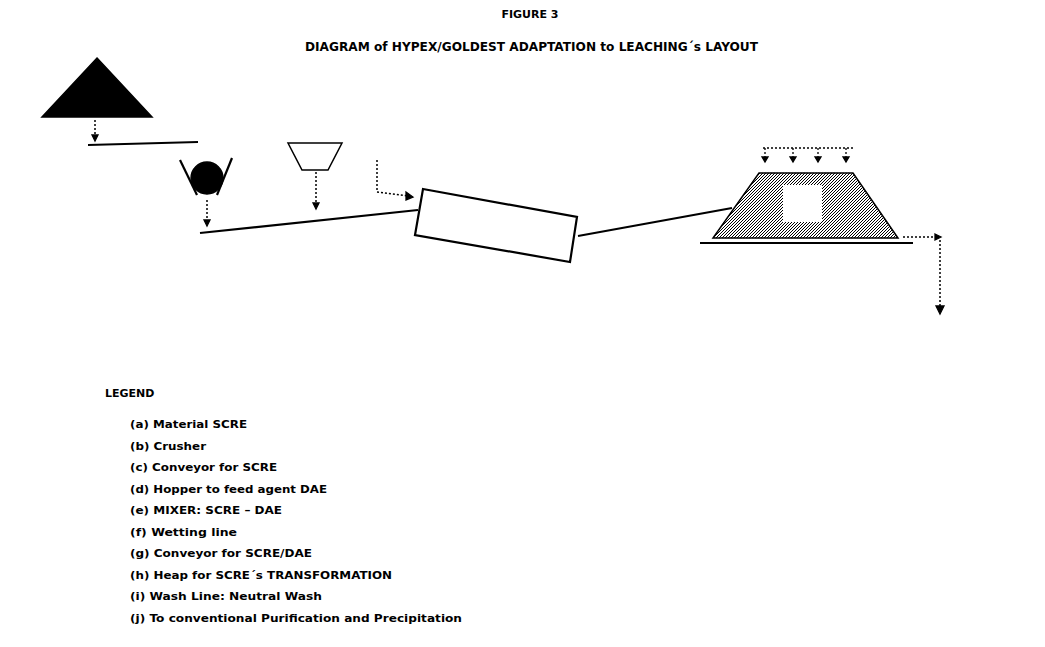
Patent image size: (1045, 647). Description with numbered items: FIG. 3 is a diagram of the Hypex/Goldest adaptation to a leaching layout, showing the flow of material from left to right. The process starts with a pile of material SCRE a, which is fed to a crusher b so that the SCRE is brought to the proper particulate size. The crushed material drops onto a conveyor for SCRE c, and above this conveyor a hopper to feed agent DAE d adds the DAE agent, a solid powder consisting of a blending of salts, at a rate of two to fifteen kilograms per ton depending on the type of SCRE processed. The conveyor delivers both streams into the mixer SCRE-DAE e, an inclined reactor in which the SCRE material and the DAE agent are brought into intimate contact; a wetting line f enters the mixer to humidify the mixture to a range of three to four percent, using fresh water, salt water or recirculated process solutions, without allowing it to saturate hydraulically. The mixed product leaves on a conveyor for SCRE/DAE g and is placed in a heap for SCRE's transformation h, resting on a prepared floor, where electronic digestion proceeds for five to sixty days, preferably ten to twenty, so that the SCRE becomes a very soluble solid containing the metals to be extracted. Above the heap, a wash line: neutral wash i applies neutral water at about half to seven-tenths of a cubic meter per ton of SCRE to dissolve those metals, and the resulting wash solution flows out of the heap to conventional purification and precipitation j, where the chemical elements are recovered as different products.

The material SCRE a is at (113, 101).
The crusher b is at (189, 192).
The conveyor for SCRE c is at (309, 230).
The hopper to feed agent DAE d is at (315, 165).
The mixer SCRE-DAE e is at (496, 225).
The wetting line f is at (395, 171).
The conveyor for SCRE/DAE g is at (655, 231).
The heap for SCRE's transformation h is at (806, 208).
The wash line: neutral wash i is at (808, 145).
The to conventional purification and precipitation j is at (923, 291).